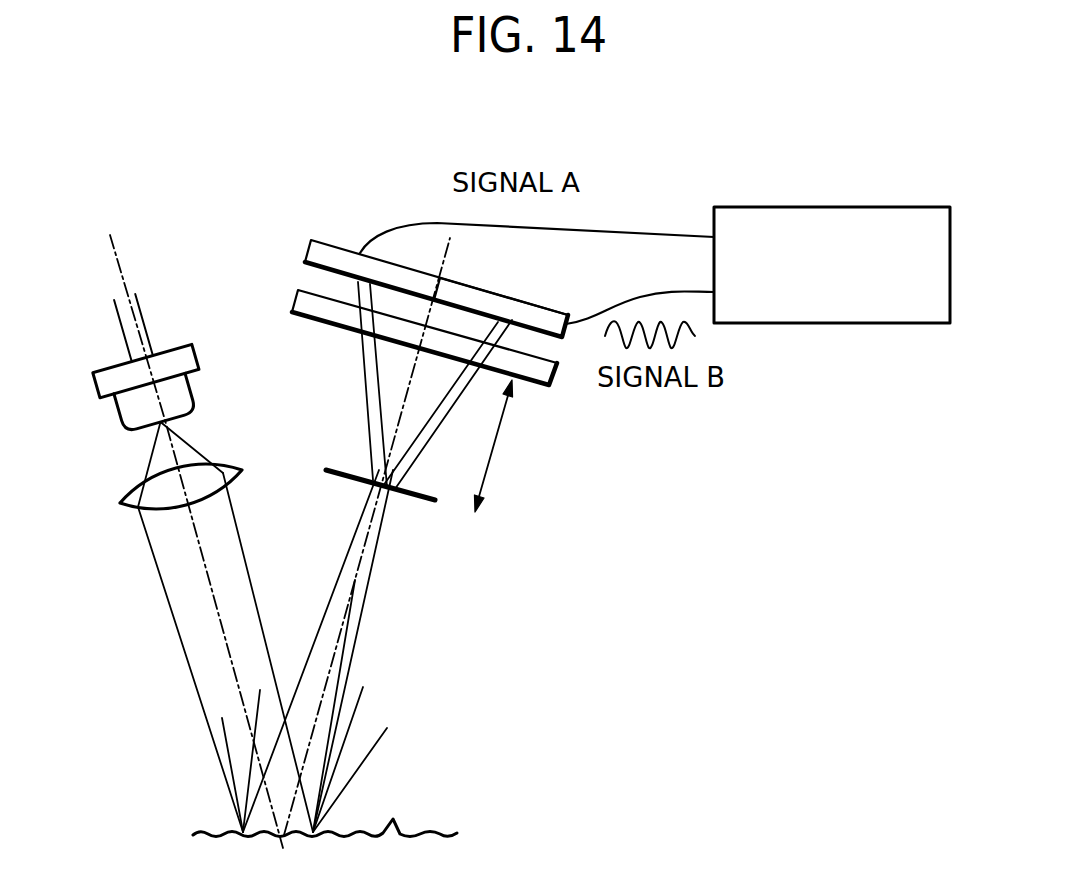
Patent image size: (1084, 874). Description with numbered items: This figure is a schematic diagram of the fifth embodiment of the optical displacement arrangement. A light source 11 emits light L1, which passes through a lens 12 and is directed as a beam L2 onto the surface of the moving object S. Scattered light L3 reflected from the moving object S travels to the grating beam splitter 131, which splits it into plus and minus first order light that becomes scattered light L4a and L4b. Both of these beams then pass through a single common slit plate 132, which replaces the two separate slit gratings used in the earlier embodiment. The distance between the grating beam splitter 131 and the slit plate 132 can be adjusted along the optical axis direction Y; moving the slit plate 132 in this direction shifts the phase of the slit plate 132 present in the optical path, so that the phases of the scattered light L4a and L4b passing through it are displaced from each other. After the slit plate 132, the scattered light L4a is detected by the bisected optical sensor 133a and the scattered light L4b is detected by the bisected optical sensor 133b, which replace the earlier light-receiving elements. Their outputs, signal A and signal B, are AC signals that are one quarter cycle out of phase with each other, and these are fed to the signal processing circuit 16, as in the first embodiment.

The laser light source 11 is at (116, 372).
The lens 12 is at (132, 505).
The signal processing circuit 16 is at (850, 206).
The grating beam splitter 131 is at (408, 497).
The slit plate 132 is at (298, 300).
The bisected optical sensor 133a is at (311, 250).
The bisected optical sensor 133b is at (548, 312).
The laser beam from light source L1 is at (150, 458).
The illumination beam L2 is at (180, 641).
The scattered light L3 is at (357, 700).
The scattered light L4a is at (367, 405).
The scattered light L4b is at (433, 430).
The moving object S is at (425, 827).
The optical axis direction Y is at (500, 446).